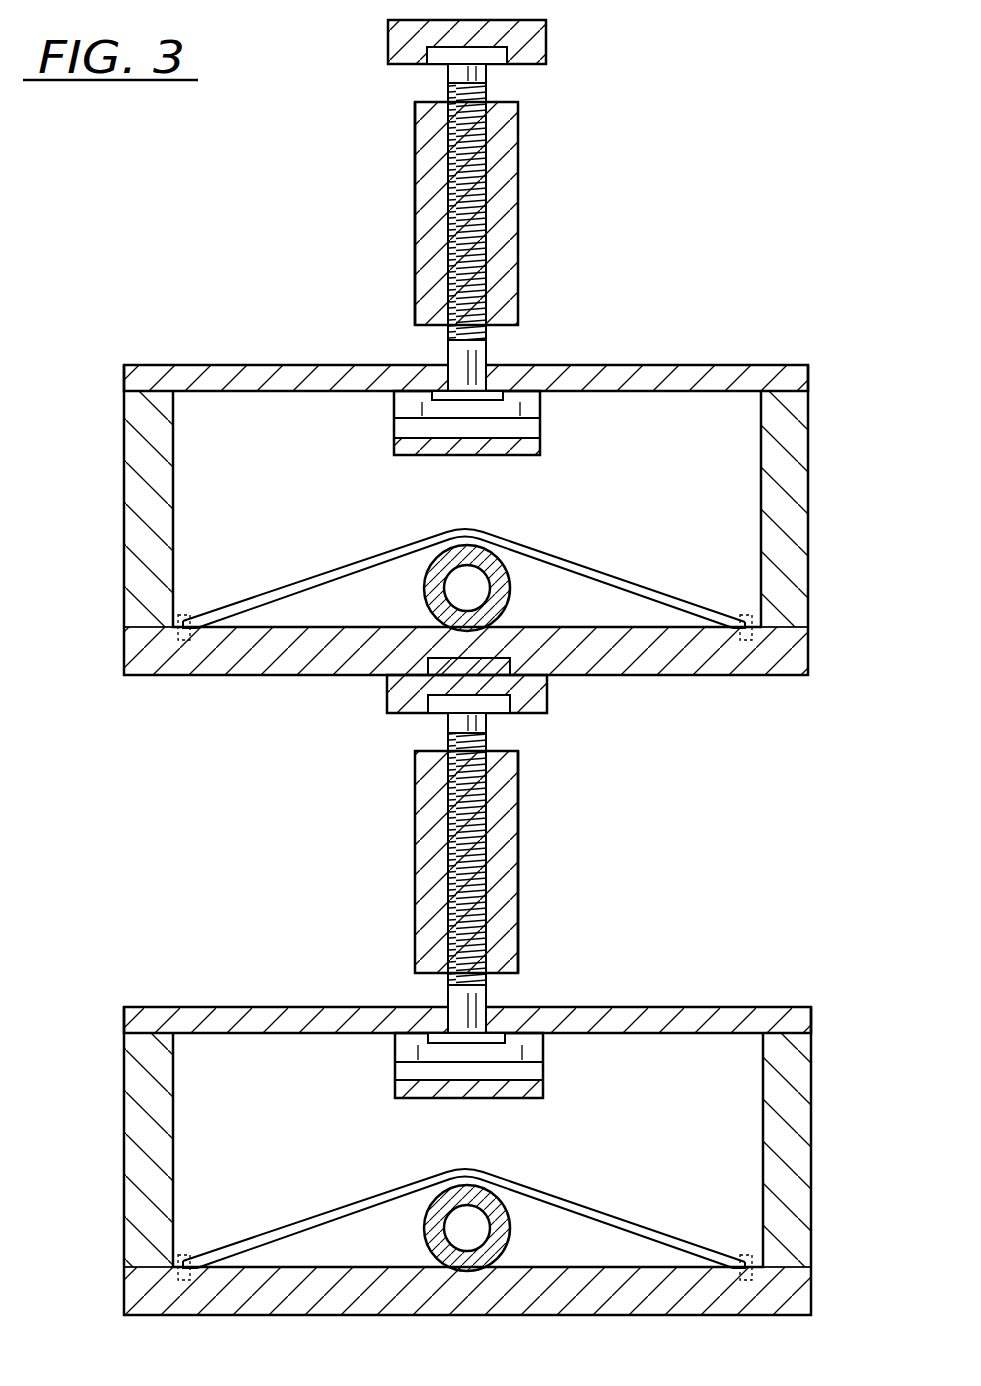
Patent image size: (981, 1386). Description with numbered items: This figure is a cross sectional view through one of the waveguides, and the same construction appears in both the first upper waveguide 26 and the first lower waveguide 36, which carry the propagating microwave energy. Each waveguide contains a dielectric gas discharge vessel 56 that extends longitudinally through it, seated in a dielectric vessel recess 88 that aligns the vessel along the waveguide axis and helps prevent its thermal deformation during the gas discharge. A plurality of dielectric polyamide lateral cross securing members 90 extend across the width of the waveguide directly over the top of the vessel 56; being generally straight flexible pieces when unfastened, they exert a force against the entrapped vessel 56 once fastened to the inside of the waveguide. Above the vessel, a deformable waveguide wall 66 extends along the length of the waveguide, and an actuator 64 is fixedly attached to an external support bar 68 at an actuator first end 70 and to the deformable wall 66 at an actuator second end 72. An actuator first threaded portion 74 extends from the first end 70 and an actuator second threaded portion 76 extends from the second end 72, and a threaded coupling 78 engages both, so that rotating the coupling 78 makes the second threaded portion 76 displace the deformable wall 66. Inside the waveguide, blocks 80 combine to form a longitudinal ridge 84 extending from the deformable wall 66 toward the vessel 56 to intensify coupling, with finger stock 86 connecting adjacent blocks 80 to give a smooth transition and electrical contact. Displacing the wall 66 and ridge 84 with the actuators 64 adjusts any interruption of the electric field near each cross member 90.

The first upper waveguide 26 is at (792, 441).
The first lower waveguide 36 is at (798, 1088).
The dielectric gas discharge vessel 56 is at (480, 575).
The actuator 64 is at (519, 142).
The deformable waveguide wall 66 is at (230, 365).
The support bar 68 is at (548, 44).
The actuator first end 70 is at (448, 78).
The actuator second end 72 is at (448, 346).
The actuator first threaded portion 74 is at (487, 80).
The actuator second threaded portion 76 is at (486, 346).
The threaded coupling 78 is at (415, 140).
The block 80 is at (542, 412).
The longitudinal ridge 84 is at (394, 432).
The finger stock 86 is at (430, 453).
The dielectric vessel recess 88 is at (432, 608).
The lateral cross securing member 90 is at (668, 592).